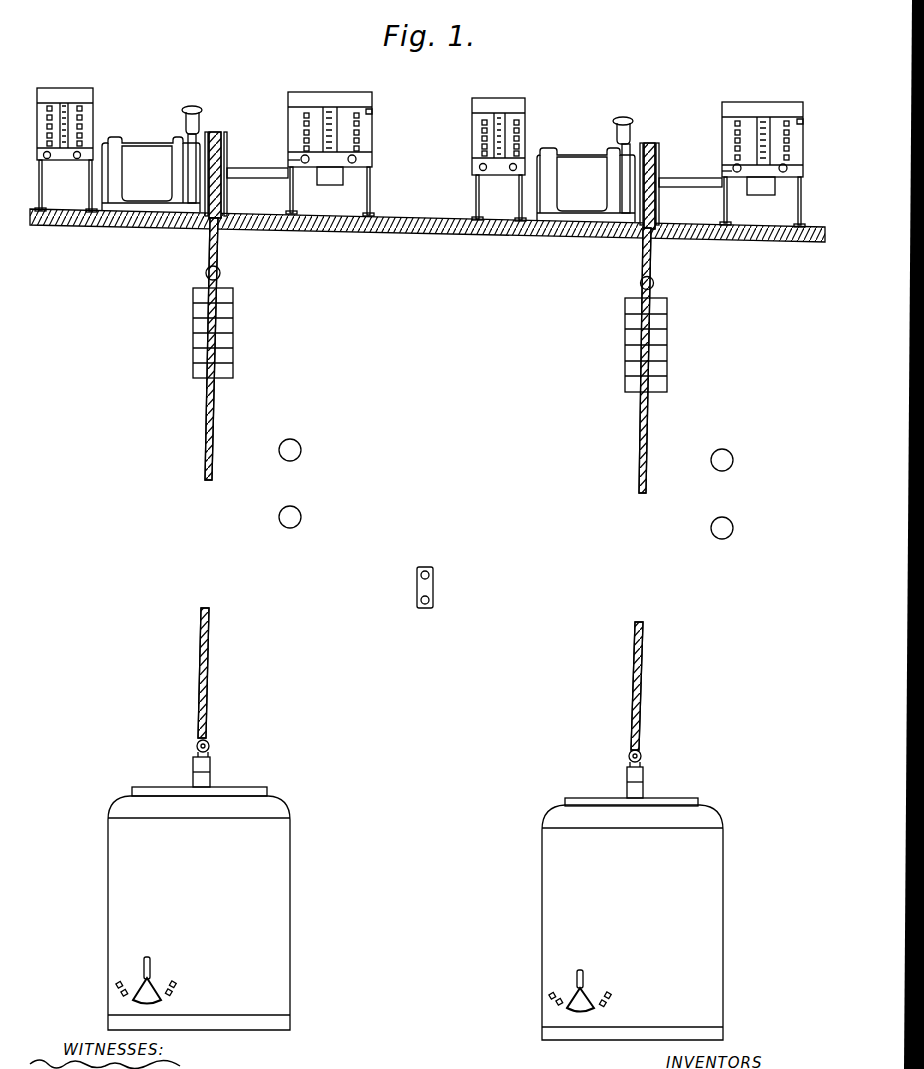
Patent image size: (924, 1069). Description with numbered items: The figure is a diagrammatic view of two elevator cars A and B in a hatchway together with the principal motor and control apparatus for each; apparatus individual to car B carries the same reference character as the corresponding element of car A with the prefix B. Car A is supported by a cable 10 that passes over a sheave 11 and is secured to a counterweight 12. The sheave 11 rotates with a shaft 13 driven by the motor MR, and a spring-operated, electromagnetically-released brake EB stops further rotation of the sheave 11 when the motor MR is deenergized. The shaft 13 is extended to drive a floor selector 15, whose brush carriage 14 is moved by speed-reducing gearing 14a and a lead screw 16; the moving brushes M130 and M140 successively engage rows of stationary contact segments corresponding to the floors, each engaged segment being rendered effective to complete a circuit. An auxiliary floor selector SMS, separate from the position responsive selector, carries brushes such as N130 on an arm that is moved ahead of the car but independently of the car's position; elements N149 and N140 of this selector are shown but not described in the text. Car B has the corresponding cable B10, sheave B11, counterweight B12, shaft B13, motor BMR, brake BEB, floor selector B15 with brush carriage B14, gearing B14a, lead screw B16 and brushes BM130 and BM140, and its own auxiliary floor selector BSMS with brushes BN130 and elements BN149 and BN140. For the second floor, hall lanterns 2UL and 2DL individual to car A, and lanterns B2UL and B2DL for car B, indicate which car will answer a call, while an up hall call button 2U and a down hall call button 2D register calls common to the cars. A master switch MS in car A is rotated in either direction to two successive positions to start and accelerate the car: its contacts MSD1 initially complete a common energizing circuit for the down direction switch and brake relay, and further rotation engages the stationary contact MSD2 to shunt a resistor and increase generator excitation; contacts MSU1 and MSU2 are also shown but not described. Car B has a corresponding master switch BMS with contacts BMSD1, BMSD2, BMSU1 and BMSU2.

The auxiliary floor selector SMS is at (66, 139).
The contact N149 is at (86, 108).
The brush N130 is at (47, 159).
The contact N140 is at (78, 159).
The motor MR is at (154, 128).
The brake EB is at (192, 106).
The sheave 11 is at (222, 133).
The shaft 13 is at (268, 180).
The brush carriage 14 is at (298, 160).
The floor selector 15 is at (370, 86).
The lead screw 16 is at (362, 149).
The selector brush M130 is at (303, 156).
The selector brush M140 is at (356, 162).
The speed-reducing gearing 14a is at (353, 192).
The auxiliary floor selector BSMS is at (499, 151).
The contact BN149 is at (481, 138).
The brush BN130 is at (480, 166).
The contact BN140 is at (511, 171).
The motor BMR is at (592, 134).
The brake BEB is at (623, 117).
The sheave B11 is at (659, 148).
The shaft B13 is at (690, 187).
The brush carriage B14 is at (722, 171).
The floor selector B15 is at (742, 88).
The lead screw B16 is at (768, 126).
The selector brush BM130 is at (735, 165).
The selector brush BM140 is at (784, 173).
The speed-reducing gearing B14a is at (767, 188).
The cable 10 is at (207, 415).
The counterweight 12 is at (236, 300).
The hall lantern 2UL is at (302, 452).
The hall lantern 2DL is at (302, 519).
The cable B10 is at (640, 430).
The counterweight B12 is at (622, 312).
The hall lantern B2UL is at (734, 461).
The hall lantern B2DL is at (734, 529).
The up hall call button 2U is at (416, 575).
The down hall call button 2D is at (416, 600).
The elevator car A is at (242, 791).
The elevator car B is at (585, 800).
The master switch MS is at (152, 970).
The stationary contact MSD2 is at (118, 983).
The master switch contacts MSD1 is at (122, 993).
The master switch up contact 2 MSU2 is at (178, 985).
The master switch up contact 1 MSU1 is at (175, 995).
The master switch BMS is at (587, 985).
The stationary contact BMSD2 is at (550, 996).
The master switch contacts BMSD1 is at (558, 1002).
The boom master switch up contact 2 BMSU2 is at (613, 996).
The boom master switch up contact 1 BMSU1 is at (607, 1004).